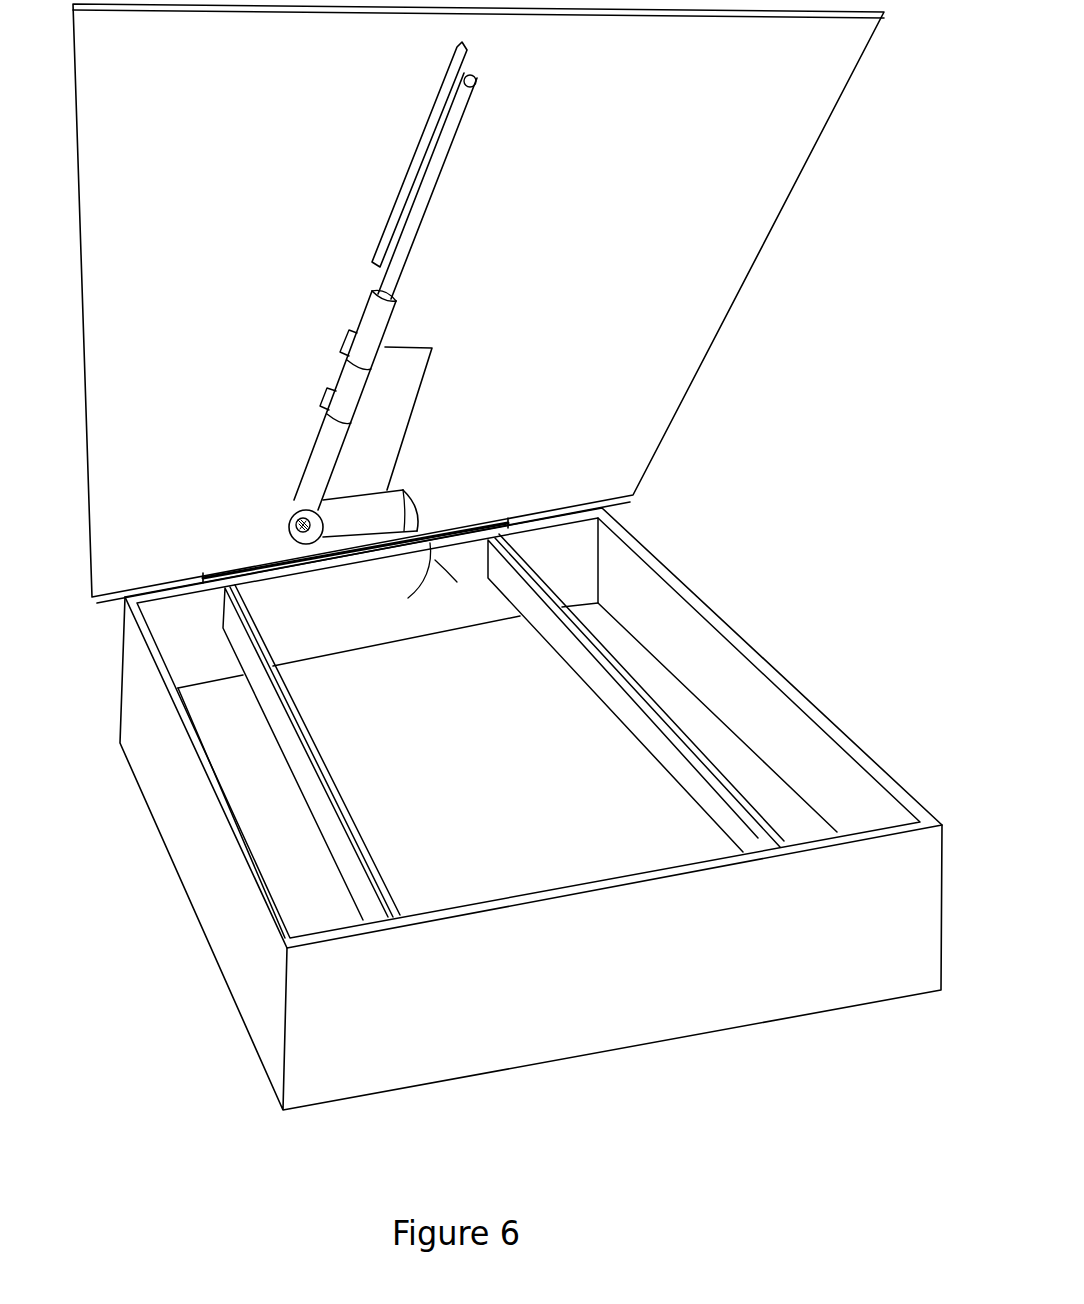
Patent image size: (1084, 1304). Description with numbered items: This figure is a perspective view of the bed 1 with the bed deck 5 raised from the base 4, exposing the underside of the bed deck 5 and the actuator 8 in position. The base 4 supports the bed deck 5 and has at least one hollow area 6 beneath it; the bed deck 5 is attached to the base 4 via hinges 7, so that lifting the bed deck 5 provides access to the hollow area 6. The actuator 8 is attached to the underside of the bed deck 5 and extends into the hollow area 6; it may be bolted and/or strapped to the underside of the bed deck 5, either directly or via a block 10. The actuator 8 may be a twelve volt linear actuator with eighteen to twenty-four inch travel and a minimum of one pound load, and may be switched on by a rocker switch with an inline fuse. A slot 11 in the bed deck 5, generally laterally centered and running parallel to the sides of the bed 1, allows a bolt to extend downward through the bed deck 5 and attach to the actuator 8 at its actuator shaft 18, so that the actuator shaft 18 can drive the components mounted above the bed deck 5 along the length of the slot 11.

The bed 1 is at (755, 505).
The base 4 is at (195, 855).
The bed deck 5 is at (651, 273).
The hollow area 6 is at (478, 764).
The hinges 7 is at (455, 532).
The actuator 8 is at (385, 512).
The block 10 is at (392, 404).
The slot 11 is at (425, 137).
The actuator shaft 18 is at (418, 212).